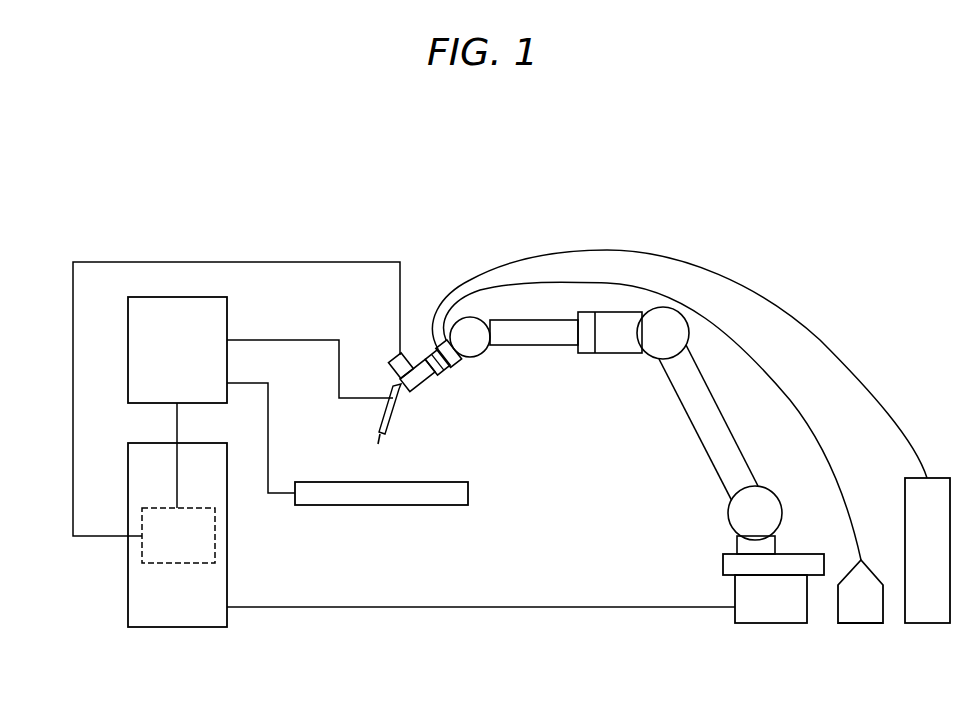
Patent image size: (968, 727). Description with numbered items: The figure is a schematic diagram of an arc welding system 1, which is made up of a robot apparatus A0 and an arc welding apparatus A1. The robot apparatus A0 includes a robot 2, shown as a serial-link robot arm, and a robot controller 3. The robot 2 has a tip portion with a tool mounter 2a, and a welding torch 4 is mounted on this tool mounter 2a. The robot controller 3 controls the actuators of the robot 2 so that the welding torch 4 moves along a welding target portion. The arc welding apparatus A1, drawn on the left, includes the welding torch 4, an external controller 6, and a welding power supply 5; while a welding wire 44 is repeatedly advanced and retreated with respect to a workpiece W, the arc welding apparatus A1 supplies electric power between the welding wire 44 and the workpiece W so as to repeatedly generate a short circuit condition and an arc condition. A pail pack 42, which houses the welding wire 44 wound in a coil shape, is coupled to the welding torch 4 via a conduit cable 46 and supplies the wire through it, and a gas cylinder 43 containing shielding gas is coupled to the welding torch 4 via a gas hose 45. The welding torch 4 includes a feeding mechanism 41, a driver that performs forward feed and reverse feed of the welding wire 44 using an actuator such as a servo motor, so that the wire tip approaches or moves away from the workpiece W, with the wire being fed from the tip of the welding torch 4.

The arc welding system 1 is at (490, 226).
The robot apparatus A0 is at (612, 229).
The arc welding apparatus A1 is at (267, 241).
The robot 2 is at (669, 448).
The tool mounter 2a is at (462, 360).
The robot controller 3 is at (181, 628).
The welding torch 4 is at (420, 409).
The feeding mechanism 41 is at (397, 357).
The pail pack 42 is at (861, 624).
The gas cylinder 43 is at (927, 624).
The welding wire 44 is at (379, 440).
The gas hose 45 is at (825, 318).
The conduit cable 46 is at (727, 330).
The welding power supply 5 is at (228, 310).
The external controller 6 is at (217, 530).
The workpiece W is at (397, 506).